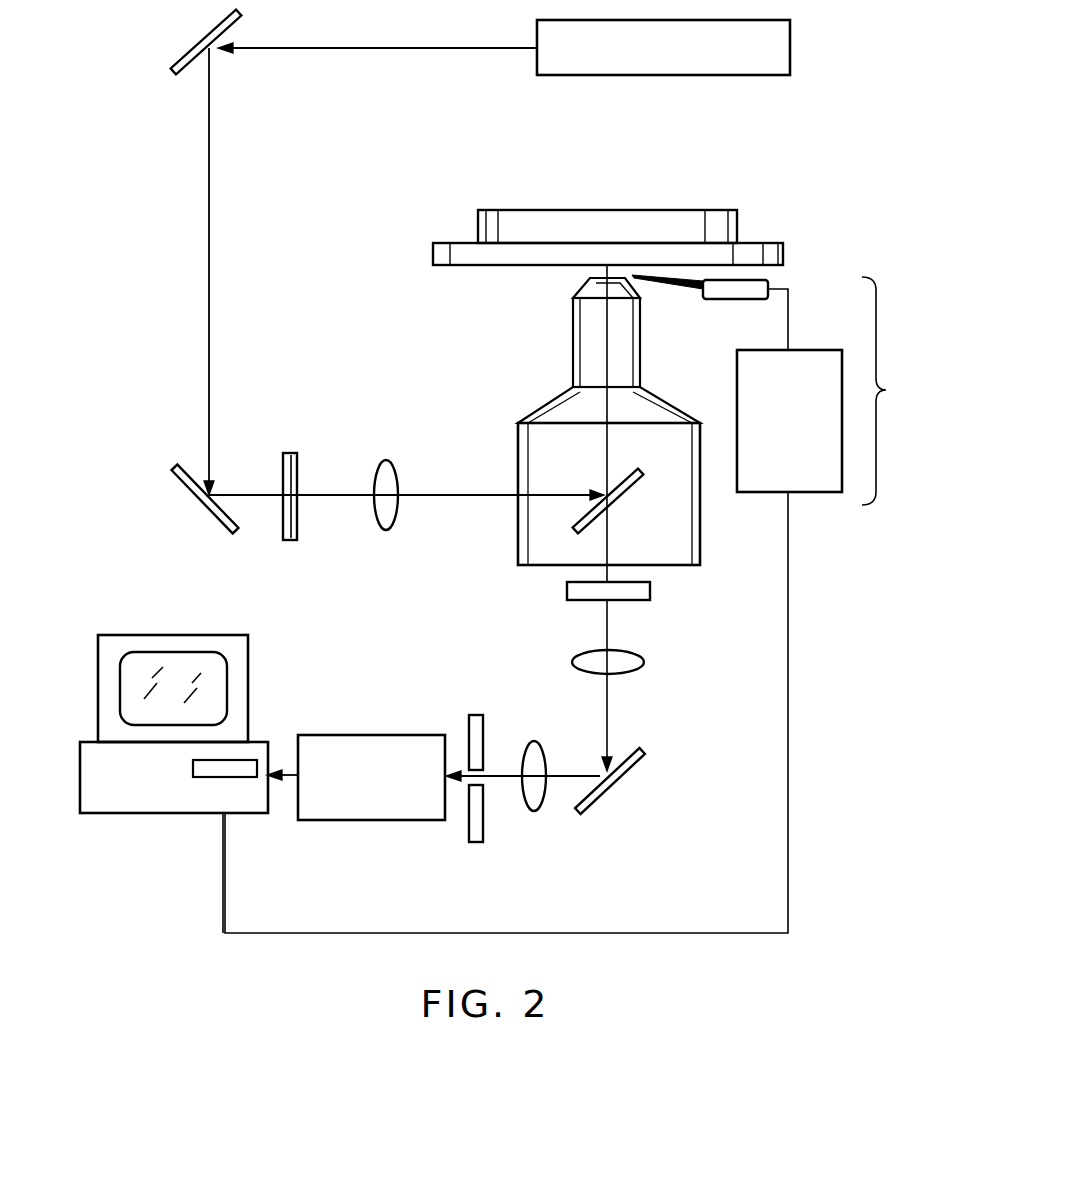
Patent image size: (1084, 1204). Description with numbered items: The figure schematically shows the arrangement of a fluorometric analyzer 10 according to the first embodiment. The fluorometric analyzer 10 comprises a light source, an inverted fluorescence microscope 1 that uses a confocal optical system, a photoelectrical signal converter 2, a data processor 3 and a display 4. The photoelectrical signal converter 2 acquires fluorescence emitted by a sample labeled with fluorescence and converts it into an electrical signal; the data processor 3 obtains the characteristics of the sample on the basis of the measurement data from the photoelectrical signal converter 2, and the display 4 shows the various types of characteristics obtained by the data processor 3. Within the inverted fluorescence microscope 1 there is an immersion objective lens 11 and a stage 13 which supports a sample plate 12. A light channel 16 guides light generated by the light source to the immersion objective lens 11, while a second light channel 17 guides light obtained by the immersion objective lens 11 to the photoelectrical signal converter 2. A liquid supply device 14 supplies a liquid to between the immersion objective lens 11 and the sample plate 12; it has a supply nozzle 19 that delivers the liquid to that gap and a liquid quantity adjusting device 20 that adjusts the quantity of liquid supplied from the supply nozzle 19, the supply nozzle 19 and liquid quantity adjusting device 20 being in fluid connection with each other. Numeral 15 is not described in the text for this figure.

The inverted fluorescence microscope 1 is at (459, 600).
The photoelectrical signal converter 2 is at (390, 822).
The data processor 3 is at (136, 816).
The display 4 is at (252, 694).
The fluorometric analyzer 10 is at (186, 336).
The immersion objective lens 11 is at (571, 334).
The sample plate 12 is at (612, 208).
The stage 13 is at (470, 268).
The liquid supply device 14 is at (885, 391).
The light source 15 is at (677, 20).
The light channel 16 is at (336, 520).
The light channel 17 is at (548, 708).
The supply nozzle 19 is at (726, 302).
The liquid quantity adjusting device 20 is at (768, 494).